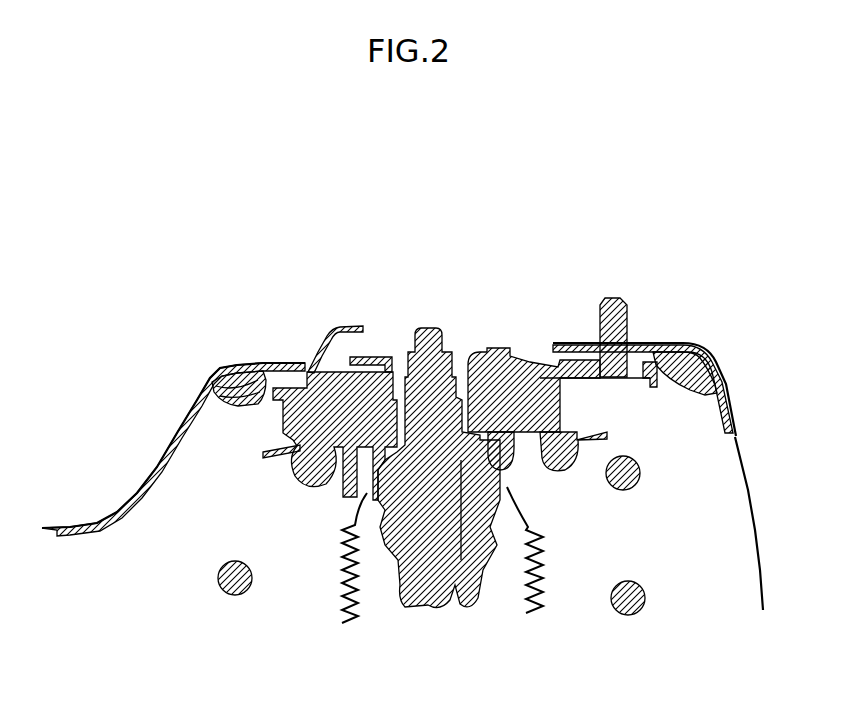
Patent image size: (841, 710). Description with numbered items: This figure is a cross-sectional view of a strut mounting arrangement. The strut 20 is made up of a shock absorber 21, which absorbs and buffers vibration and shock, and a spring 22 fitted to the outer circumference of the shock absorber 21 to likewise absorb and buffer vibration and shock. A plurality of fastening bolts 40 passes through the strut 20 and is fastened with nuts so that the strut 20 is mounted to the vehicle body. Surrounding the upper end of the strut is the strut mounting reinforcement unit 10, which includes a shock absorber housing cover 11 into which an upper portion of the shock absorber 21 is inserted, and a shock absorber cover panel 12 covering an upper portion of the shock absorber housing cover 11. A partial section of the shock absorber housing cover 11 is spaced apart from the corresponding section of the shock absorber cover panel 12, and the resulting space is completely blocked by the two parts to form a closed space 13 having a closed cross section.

The strut mounting reinforcement unit 10 is at (692, 323).
The shock absorber housing cover 11 is at (343, 326).
The shock absorber cover panel 12 is at (236, 368).
The closed space 13 is at (210, 377).
The strut 20 is at (428, 300).
The shock absorber 21 is at (543, 556).
The spring 22 is at (635, 465).
The fastening bolt 40 is at (609, 298).